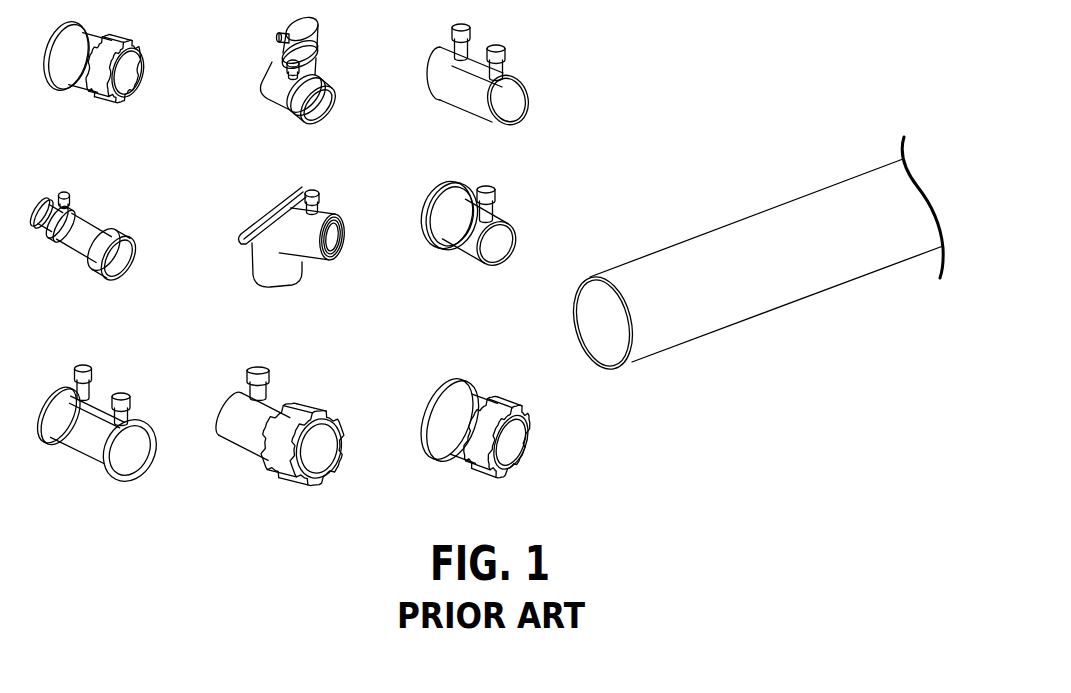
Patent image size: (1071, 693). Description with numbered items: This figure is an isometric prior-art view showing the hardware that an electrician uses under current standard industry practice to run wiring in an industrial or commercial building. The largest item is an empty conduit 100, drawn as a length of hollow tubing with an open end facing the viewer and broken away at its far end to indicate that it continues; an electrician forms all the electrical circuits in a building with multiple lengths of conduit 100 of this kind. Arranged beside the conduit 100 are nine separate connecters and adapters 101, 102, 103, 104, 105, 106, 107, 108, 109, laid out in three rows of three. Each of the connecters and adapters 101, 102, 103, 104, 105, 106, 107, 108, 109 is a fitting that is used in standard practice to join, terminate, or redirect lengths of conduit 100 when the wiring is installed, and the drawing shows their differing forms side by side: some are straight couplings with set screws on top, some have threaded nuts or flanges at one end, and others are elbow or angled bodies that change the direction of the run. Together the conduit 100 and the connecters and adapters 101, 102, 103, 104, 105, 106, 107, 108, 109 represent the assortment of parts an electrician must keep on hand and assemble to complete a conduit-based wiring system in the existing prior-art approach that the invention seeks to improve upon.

The conduit 100 is at (683, 240).
The connecter or adapter 101 is at (102, 43).
The connecter or adapter 102 is at (92, 227).
The connecter or adapter 103 is at (102, 393).
The connecter or adapter 104 is at (308, 72).
The connecter or adapter 105 is at (327, 203).
The connecter or adapter 106 is at (283, 398).
The connecter or adapter 107 is at (478, 53).
The connecter or adapter 108 is at (497, 213).
The connecter or adapter 109 is at (482, 393).